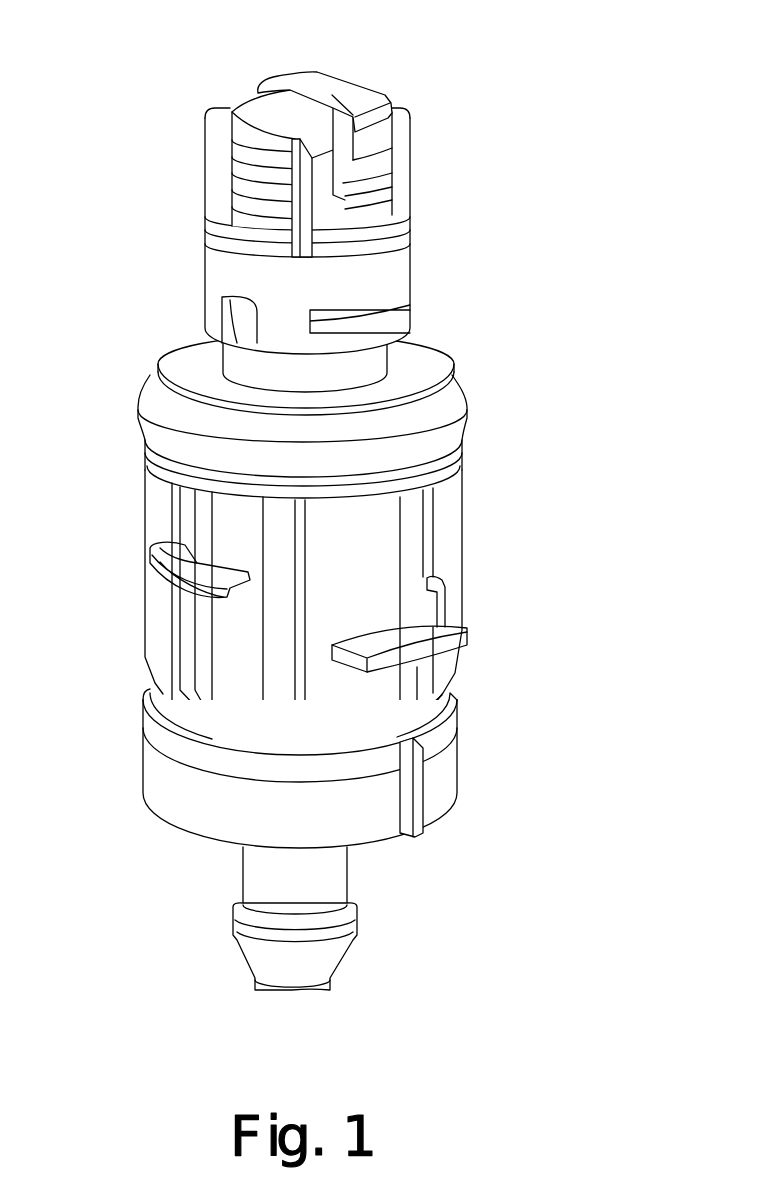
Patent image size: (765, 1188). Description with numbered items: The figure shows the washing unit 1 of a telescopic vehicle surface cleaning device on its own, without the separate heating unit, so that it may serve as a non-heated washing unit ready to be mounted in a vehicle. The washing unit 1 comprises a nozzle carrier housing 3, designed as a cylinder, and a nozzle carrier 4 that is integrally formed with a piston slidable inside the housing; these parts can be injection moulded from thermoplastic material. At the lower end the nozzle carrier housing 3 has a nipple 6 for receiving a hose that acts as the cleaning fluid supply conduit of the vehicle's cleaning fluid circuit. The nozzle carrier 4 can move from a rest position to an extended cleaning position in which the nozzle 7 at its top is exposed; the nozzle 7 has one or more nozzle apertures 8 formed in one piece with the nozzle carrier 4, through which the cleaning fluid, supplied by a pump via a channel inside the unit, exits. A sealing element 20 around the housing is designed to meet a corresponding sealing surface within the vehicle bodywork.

The washing unit 1 is at (498, 356).
The nozzle carrier housing 3 is at (455, 565).
The nozzle carrier 4 is at (398, 262).
The nipple 6 is at (333, 898).
The nozzle 7 is at (378, 93).
The nozzle apertures 8 is at (245, 138).
The sealing element 20 is at (466, 413).